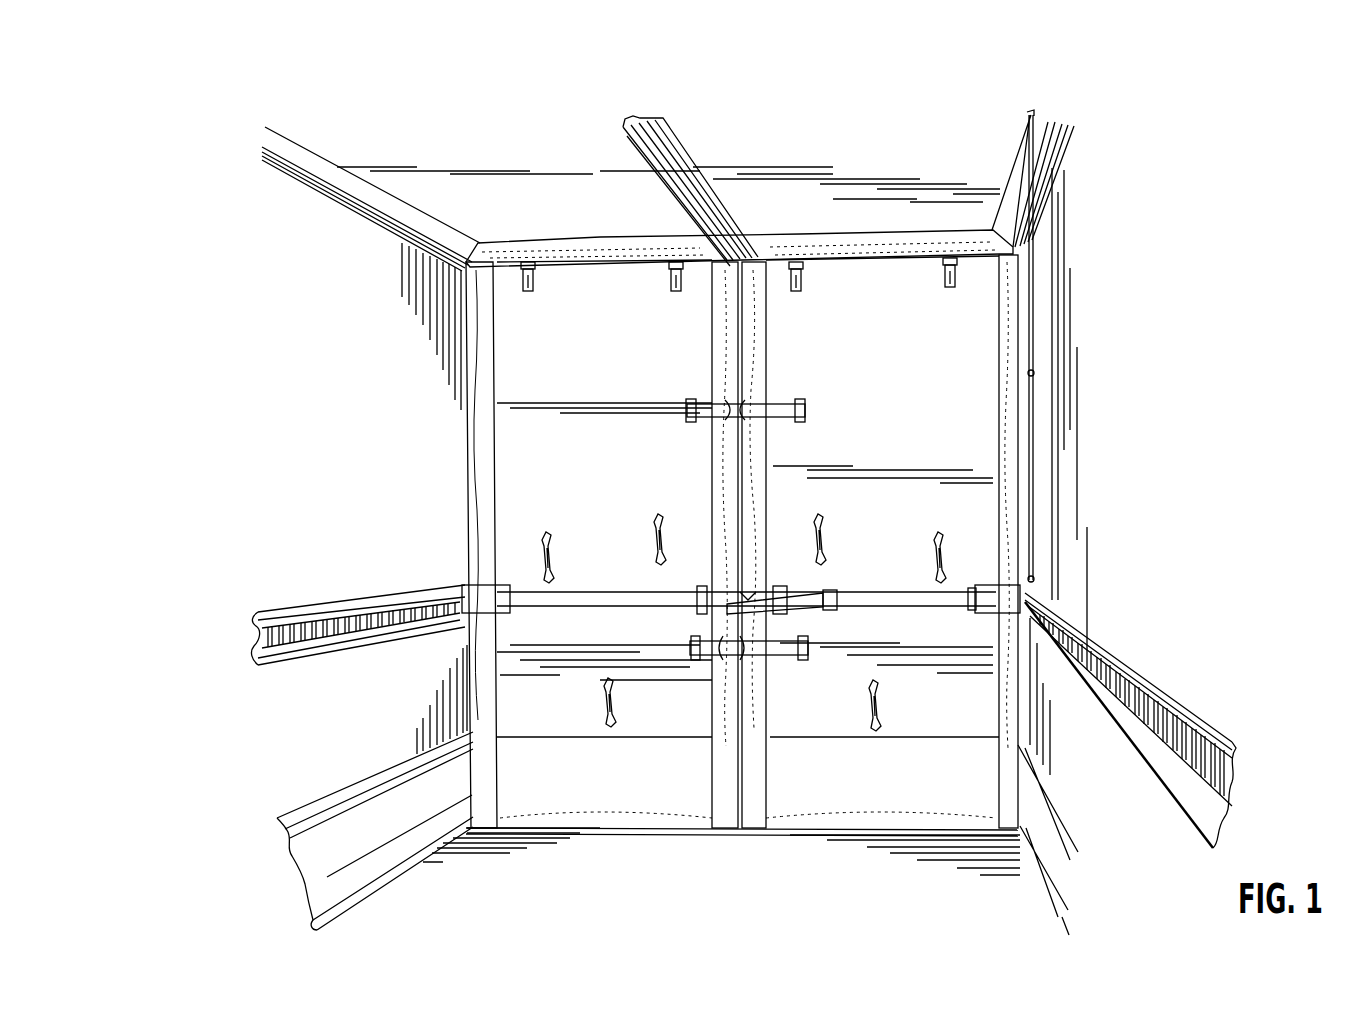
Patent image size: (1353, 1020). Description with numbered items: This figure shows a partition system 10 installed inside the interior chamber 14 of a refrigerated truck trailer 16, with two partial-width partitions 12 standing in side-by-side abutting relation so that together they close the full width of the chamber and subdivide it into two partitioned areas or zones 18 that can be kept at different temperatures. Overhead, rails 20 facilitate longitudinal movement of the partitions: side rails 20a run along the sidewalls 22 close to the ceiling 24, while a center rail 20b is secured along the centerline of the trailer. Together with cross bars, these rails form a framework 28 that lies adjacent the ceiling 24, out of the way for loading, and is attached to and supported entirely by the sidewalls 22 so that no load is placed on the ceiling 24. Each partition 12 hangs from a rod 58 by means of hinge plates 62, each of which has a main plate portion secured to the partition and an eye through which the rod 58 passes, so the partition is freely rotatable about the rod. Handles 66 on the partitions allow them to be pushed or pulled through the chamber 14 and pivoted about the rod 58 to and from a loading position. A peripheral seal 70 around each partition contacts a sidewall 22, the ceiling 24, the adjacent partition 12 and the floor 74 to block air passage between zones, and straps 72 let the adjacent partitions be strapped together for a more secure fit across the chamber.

The partition system 10 is at (986, 123).
The partition 12 is at (523, 445).
The interior chamber 14 is at (1118, 819).
The truck trailer 16 is at (1107, 522).
The partitioned area or zone 18 is at (992, 458).
The rail 20 is at (325, 156).
The side rail 20a is at (273, 140).
The center rail 20b is at (605, 150).
The sidewall 22 is at (280, 250).
The ceiling 24 is at (877, 162).
The framework 28 is at (1050, 224).
The rod 58 is at (566, 262).
The hinge plate 62 is at (675, 290).
The handle 66 is at (934, 562).
The peripheral seal 70 is at (920, 238).
The strap 72 is at (783, 392).
The floor 74 is at (835, 917).